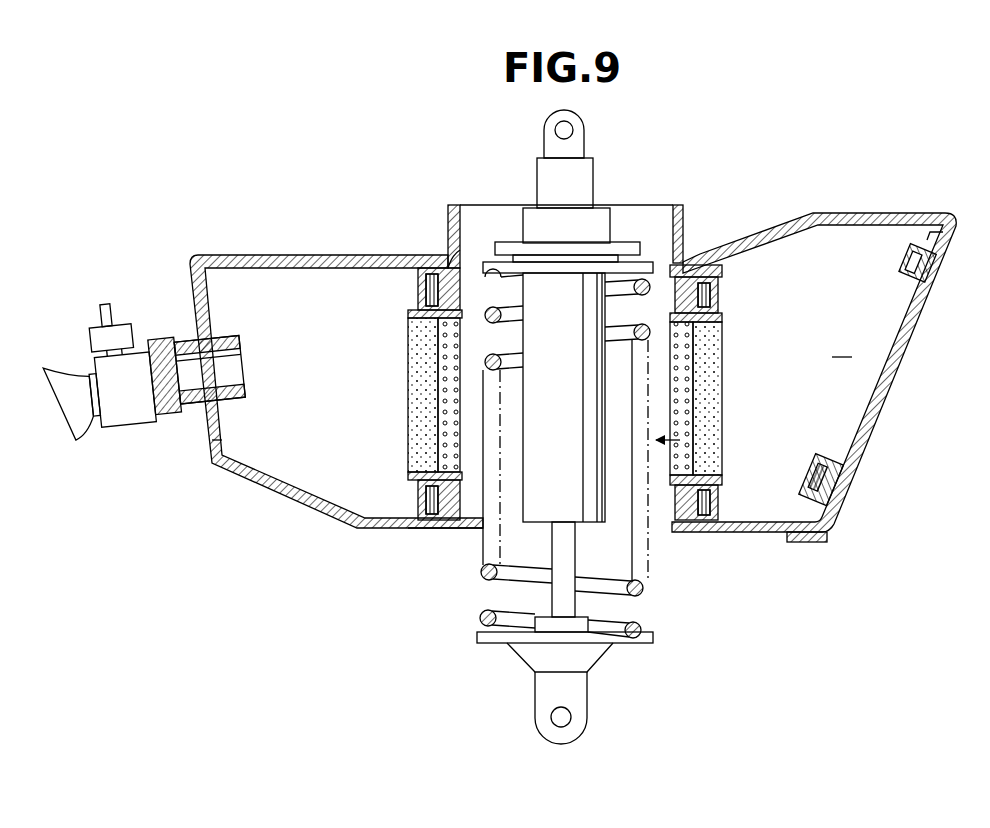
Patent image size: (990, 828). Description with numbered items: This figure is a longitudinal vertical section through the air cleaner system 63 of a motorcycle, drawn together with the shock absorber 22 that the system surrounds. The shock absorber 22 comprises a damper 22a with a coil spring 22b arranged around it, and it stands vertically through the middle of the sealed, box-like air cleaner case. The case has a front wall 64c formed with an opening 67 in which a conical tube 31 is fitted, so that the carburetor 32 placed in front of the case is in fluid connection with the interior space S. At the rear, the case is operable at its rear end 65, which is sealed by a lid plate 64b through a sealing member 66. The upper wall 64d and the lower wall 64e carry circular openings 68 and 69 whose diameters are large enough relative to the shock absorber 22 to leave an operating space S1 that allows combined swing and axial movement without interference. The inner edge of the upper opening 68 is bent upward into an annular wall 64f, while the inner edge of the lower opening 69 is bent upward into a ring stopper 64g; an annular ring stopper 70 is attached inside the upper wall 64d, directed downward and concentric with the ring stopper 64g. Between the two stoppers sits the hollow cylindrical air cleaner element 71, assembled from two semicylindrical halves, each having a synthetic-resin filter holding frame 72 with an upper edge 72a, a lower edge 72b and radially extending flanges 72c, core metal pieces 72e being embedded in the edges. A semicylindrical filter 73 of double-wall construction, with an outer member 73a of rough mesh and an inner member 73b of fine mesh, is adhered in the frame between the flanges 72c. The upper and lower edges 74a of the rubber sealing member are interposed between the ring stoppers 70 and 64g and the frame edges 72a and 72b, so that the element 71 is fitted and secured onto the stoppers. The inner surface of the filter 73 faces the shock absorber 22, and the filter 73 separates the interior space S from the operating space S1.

The shock absorber 22 is at (603, 181).
The damper 22a is at (640, 592).
The coil spring 22b is at (540, 495).
The conical tube 31 is at (195, 414).
The carburetor 32 is at (115, 405).
The air cleaner system 63 is at (866, 212).
The lid plate 64b is at (886, 400).
The front wall 64c is at (222, 442).
The upper wall 64d is at (310, 255).
The lower wall 64e is at (455, 530).
The annular wall 64f is at (684, 212).
The ring stopper 64g is at (500, 560).
The openable rear end 65 is at (845, 466).
The sealing member 66 is at (938, 264).
The opening 67 is at (236, 366).
The upper circular opening 68 is at (655, 212).
The lower circular opening 69 is at (662, 530).
The annular ring stopper 70 is at (712, 242).
The air cleaner element 71 is at (402, 437).
The filter holding frame 72 is at (412, 484).
The upper edge 72a is at (418, 290).
The lower edge 72b is at (412, 525).
The flange 72c is at (410, 314).
The core metal piece 72e is at (418, 292).
The filter 73 is at (412, 397).
The outer member 73a is at (718, 418).
The inner member 73b is at (700, 380).
The upper and lower edges of rubber sealing member 74a is at (446, 264).
The interior space S is at (842, 343).
The operating space S1 is at (700, 450).